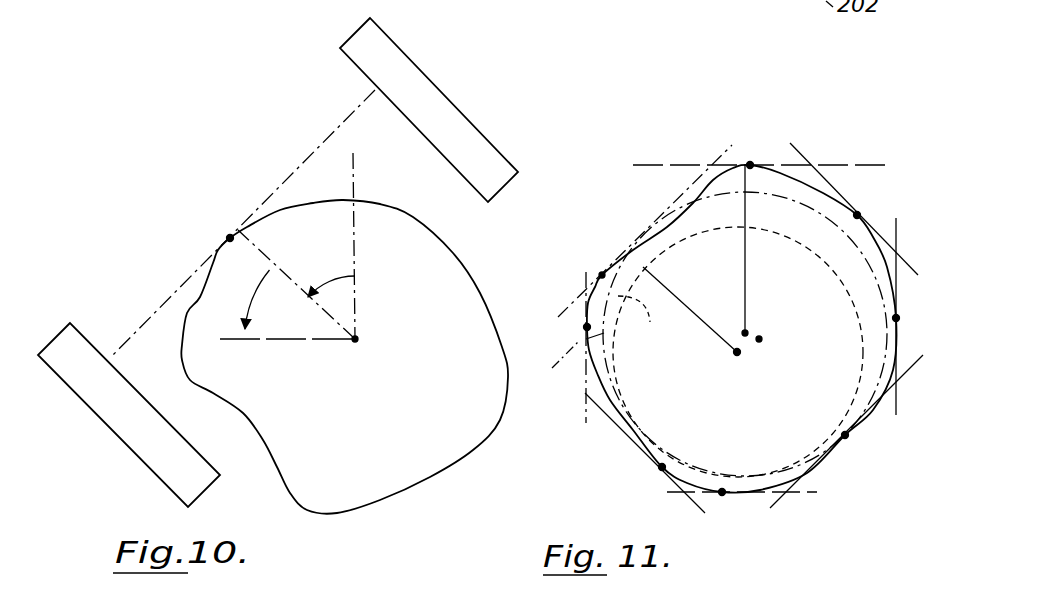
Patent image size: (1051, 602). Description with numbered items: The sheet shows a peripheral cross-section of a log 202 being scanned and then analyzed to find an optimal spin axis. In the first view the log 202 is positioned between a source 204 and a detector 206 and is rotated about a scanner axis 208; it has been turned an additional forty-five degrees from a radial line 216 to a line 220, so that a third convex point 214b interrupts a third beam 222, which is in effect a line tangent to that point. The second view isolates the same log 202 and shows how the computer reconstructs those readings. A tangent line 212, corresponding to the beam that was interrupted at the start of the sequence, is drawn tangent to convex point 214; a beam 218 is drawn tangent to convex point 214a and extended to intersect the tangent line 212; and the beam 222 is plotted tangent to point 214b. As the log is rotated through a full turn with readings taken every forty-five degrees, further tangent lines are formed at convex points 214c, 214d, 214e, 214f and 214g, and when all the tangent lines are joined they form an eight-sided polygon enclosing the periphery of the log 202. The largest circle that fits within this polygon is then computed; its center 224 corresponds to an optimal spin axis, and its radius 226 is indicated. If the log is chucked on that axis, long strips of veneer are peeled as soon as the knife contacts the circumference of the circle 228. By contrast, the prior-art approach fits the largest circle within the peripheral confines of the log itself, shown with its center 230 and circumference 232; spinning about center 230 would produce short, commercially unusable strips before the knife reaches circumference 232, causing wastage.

In FIG. 10, the log 202 is at (462, 254).
In FIG. 11, the log 202 is at (606, 445).
In FIG. 10, the source 204 is at (443, 107).
In FIG. 10, the detector 206 is at (125, 418).
In FIG. 10, the scanner axis 208 is at (356, 341).
In FIG. 11, the scanner axis 208 is at (760, 340).
In FIG. 11, the beam 212 is at (730, 152).
In FIG. 11, the convex point 214 is at (602, 275).
In FIG. 11, the convex point 214a is at (750, 165).
In FIG. 10, the third convex point 214b is at (230, 238).
In FIG. 11, the third convex point 214b is at (857, 215).
In FIG. 11, the convex point 214c is at (922, 308).
In FIG. 11, the convex point 214d is at (845, 435).
In FIG. 11, the convex point 214e is at (722, 492).
In FIG. 11, the convex point 214f is at (662, 467).
In FIG. 11, the convex point 214g is at (585, 327).
In FIG. 10, the radial line 216 is at (284, 260).
In FIG. 11, the beam 218 is at (835, 167).
In FIG. 10, the line 220 is at (272, 341).
In FIG. 10, the third beam 222 is at (325, 140).
In FIG. 11, the third beam 222 is at (925, 245).
In FIG. 11, the center 224 is at (747, 332).
In FIG. 11, the radius 226 is at (742, 260).
In FIG. 11, the circle 228 is at (585, 393).
In FIG. 11, the center 230 is at (737, 352).
In FIG. 11, the circumference 232 is at (648, 322).